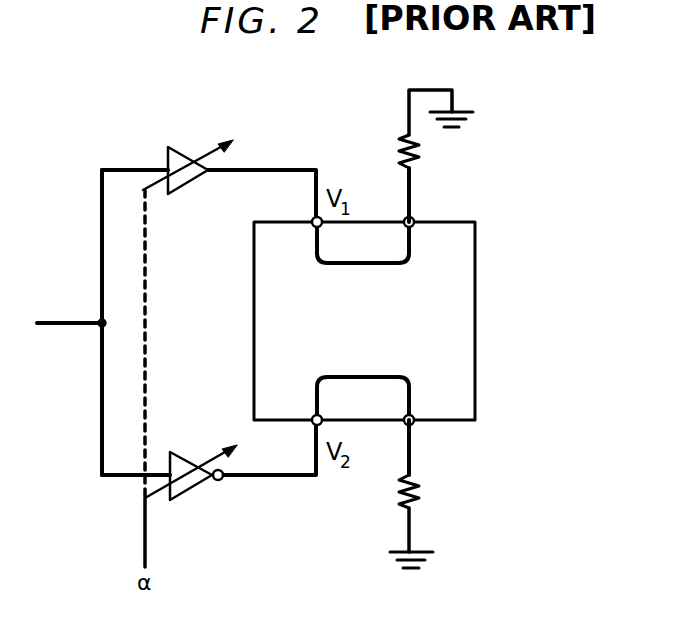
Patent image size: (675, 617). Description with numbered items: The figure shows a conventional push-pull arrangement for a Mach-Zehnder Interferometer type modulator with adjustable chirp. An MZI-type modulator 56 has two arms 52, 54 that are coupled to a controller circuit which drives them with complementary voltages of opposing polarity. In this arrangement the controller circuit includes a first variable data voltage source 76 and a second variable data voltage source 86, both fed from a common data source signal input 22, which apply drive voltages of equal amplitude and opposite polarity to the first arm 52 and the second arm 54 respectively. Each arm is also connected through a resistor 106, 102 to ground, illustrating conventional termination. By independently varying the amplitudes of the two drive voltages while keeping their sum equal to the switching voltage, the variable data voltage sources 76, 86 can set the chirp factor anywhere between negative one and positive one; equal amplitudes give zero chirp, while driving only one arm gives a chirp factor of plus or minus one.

The data source signal input 22 is at (45, 325).
The first variable data voltage source 76 is at (173, 155).
The second variable data voltage source 86 is at (190, 482).
The MZI-type modulator 56 is at (473, 262).
The first arm 52 is at (388, 263).
The second arm 54 is at (390, 377).
The resistor 106 is at (398, 152).
The resistor 102 is at (420, 500).